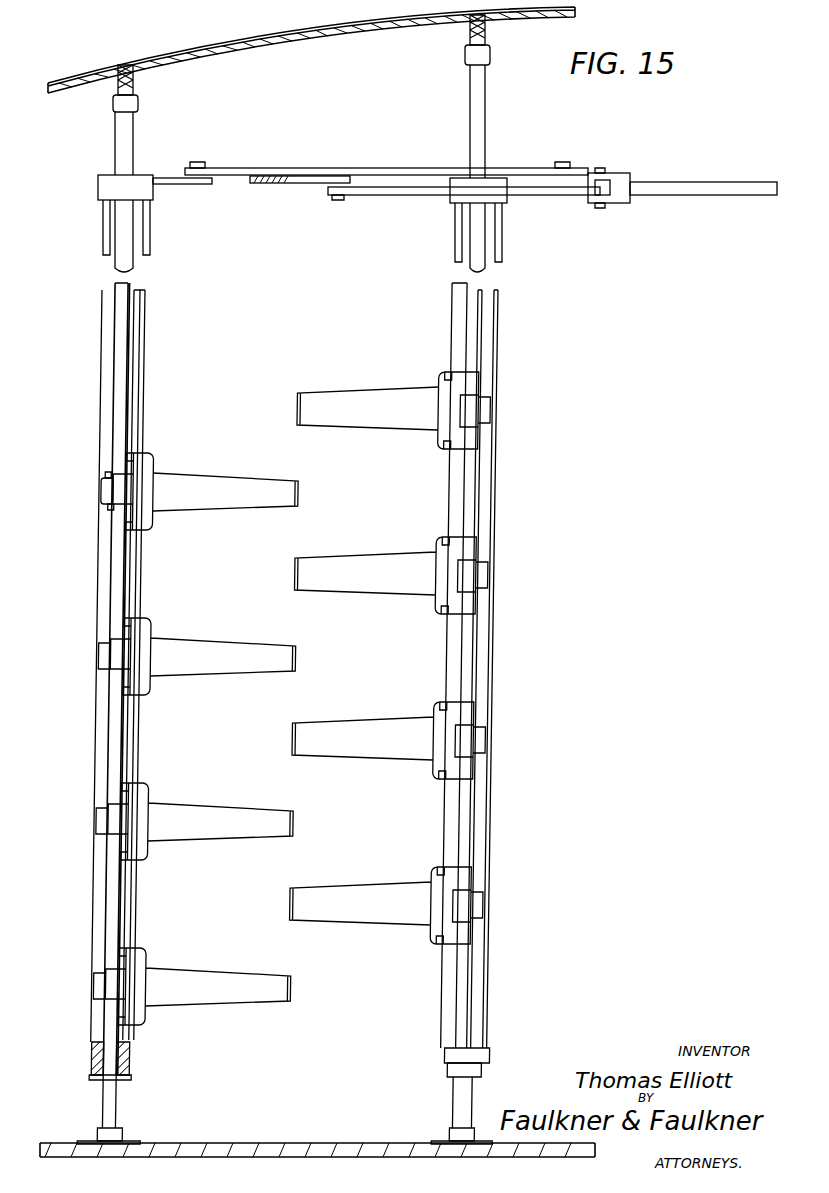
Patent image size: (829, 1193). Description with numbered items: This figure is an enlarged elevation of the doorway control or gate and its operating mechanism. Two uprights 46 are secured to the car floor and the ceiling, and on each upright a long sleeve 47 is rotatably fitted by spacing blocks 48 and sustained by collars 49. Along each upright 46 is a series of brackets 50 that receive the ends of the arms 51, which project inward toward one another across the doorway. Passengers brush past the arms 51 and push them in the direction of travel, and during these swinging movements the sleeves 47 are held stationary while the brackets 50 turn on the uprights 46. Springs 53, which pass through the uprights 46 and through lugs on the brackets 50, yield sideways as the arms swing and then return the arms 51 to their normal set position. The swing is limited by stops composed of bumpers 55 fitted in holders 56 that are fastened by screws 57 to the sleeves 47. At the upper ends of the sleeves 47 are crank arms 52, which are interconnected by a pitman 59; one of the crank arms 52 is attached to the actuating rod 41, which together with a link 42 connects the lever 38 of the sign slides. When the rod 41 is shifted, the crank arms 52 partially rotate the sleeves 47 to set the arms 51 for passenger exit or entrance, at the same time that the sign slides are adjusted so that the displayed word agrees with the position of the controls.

The lever 38 is at (265, 184).
The rod 41 is at (696, 192).
The link 42 is at (420, 195).
The upright 46 is at (118, 142).
The sleeve 47 is at (95, 912).
The spacing block 48 is at (138, 1052).
The collar 49 is at (136, 1078).
The bracket 50 is at (140, 490).
The arm 51 is at (218, 490).
The crank arm 52 is at (174, 178).
The spring 53 is at (140, 460).
The bumper 55 is at (105, 508).
The holder 56 is at (101, 492).
The screw 57 is at (105, 476).
The pitman 59 is at (352, 176).